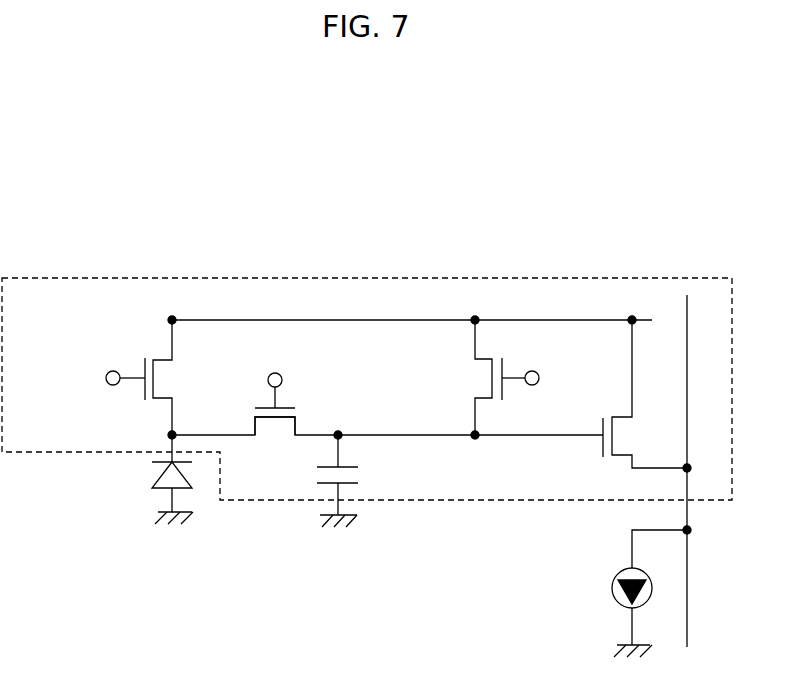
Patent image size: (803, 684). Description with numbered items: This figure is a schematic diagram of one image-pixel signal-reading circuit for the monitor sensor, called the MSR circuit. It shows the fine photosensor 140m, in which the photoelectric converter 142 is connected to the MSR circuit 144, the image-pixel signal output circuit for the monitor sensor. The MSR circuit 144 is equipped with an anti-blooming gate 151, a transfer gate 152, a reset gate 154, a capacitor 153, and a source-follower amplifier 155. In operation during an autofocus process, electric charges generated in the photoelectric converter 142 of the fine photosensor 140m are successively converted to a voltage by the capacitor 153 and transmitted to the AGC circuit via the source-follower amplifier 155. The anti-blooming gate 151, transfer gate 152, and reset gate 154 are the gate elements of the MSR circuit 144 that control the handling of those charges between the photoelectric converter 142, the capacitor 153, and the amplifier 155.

The fine photosensor 140m is at (121, 250).
The MSR circuit 144 is at (360, 278).
The photoelectric converter 142 is at (165, 492).
The anti-blooming gate 151 is at (145, 392).
The transfer gate 152 is at (297, 405).
The capacitor 153 is at (320, 466).
The reset gate 154 is at (504, 402).
The source-follower amplifier 155 is at (604, 449).